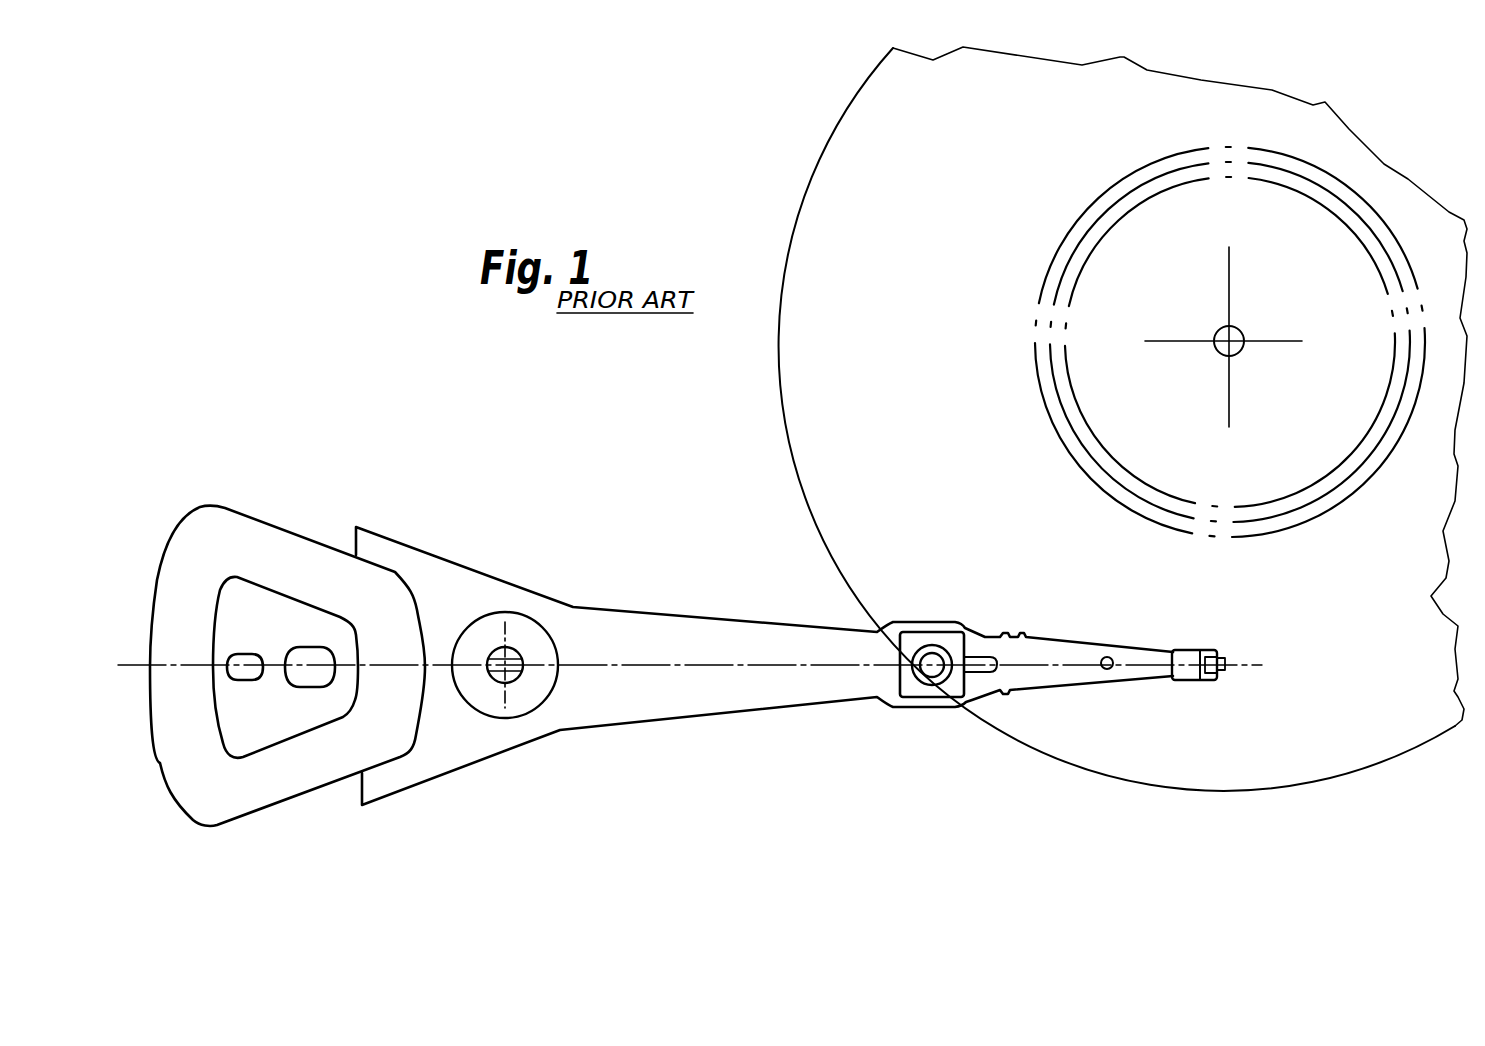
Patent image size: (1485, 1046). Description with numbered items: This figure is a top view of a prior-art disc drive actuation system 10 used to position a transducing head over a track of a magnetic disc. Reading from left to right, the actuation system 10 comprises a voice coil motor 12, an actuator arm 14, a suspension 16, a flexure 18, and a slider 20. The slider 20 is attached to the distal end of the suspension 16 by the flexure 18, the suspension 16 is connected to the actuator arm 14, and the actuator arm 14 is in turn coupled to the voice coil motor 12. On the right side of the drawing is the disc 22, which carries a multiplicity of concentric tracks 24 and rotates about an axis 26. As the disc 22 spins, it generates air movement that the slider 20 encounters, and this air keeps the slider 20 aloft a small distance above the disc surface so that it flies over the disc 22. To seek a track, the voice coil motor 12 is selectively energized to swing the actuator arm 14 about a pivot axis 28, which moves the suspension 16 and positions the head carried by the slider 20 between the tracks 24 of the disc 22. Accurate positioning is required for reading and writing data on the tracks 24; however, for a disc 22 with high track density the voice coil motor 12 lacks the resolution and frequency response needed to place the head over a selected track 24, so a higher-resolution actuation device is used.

The disc drive actuation system 10 is at (603, 472).
The voice coil motor 12 is at (180, 508).
The actuator arm 14 is at (748, 612).
The suspension 16 is at (1096, 648).
The flexure 18 is at (1190, 650).
The slider 20 is at (1222, 668).
The disc 22 is at (798, 452).
The tracks 24 is at (1290, 525).
The axis 26 is at (1218, 330).
The axis 28 is at (492, 652).